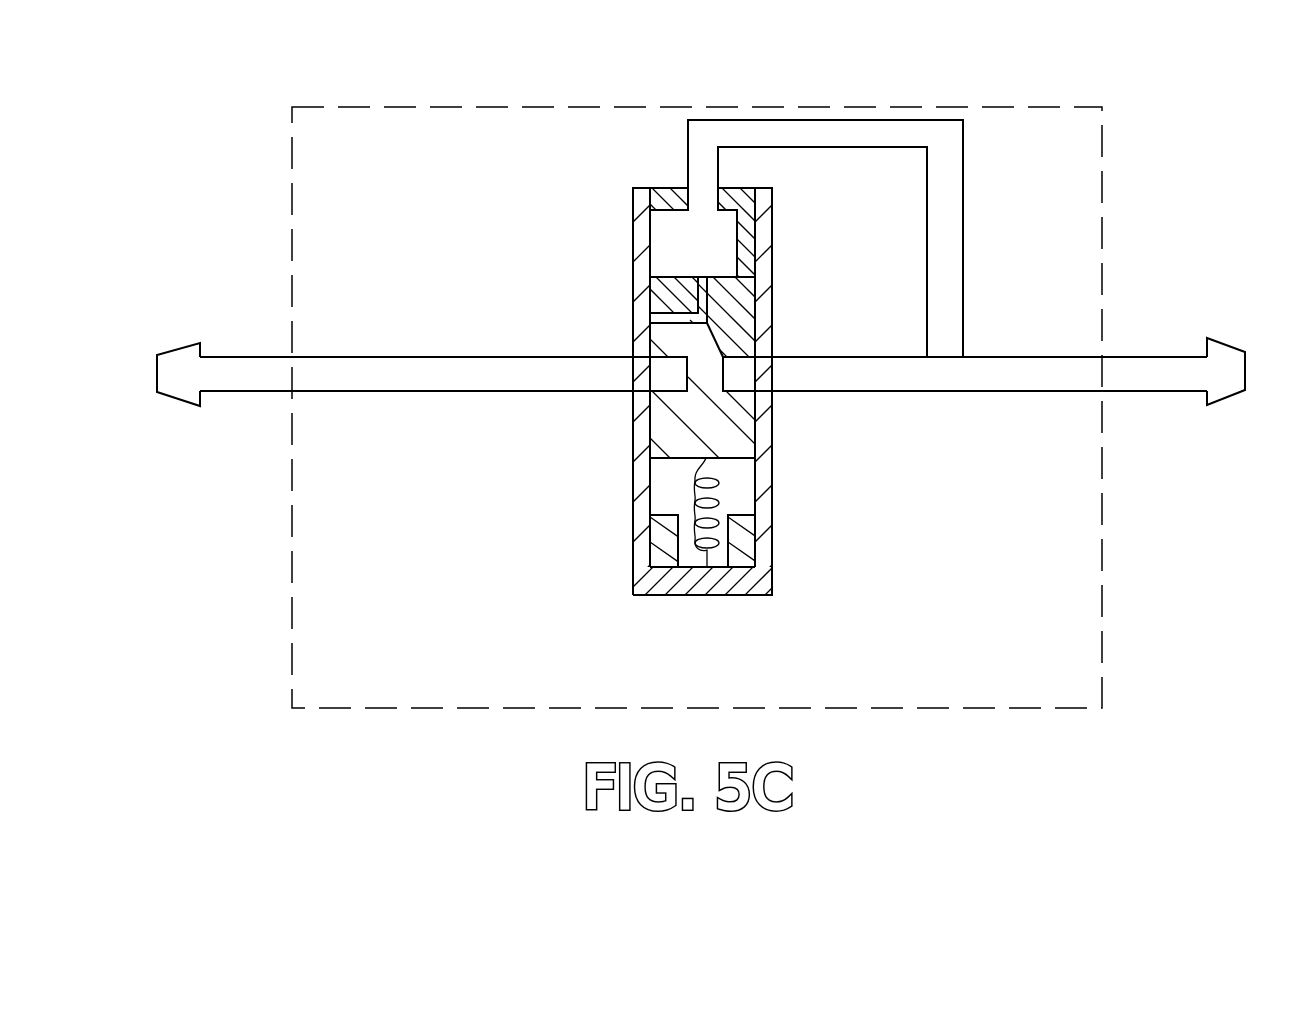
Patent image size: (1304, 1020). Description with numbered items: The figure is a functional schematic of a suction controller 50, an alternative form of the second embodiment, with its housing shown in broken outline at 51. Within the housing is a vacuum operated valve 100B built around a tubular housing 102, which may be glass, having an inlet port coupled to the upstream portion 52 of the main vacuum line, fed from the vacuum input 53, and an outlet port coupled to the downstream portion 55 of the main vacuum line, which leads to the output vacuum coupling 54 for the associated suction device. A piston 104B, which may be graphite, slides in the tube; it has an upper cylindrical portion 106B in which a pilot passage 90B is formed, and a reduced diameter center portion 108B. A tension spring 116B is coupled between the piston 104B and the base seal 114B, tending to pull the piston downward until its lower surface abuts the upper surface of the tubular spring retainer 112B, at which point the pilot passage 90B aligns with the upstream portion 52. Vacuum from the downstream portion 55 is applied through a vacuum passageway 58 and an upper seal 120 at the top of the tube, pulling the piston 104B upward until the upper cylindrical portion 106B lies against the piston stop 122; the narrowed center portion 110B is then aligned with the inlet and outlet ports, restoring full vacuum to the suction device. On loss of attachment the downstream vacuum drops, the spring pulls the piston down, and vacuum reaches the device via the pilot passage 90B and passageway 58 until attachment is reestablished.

The suction controller 50 is at (1176, 149).
The housing 51 is at (1004, 106).
The upstream portion of the main vacuum line 52 is at (383, 393).
The vacuum input 53 is at (173, 348).
The output vacuum coupling 54 is at (1229, 345).
The downstream portion of the main vacuum line 55 is at (990, 355).
The vacuum passageway 58 is at (962, 208).
The pilot passage 90B is at (678, 298).
The vacuum operated valve 100B is at (597, 258).
The tubular housing 102 is at (763, 568).
The piston 104B is at (648, 425).
The upper cylindrical portion 106B is at (731, 314).
The reduced diameter center portion 108B is at (748, 424).
The narrowed center portion 110B is at (700, 367).
The tubular spring retainer 112B is at (743, 540).
The base seal 114B is at (664, 584).
The tension spring 116B is at (697, 529).
The upper seal 120 is at (667, 195).
The piston stop 122 is at (748, 231).